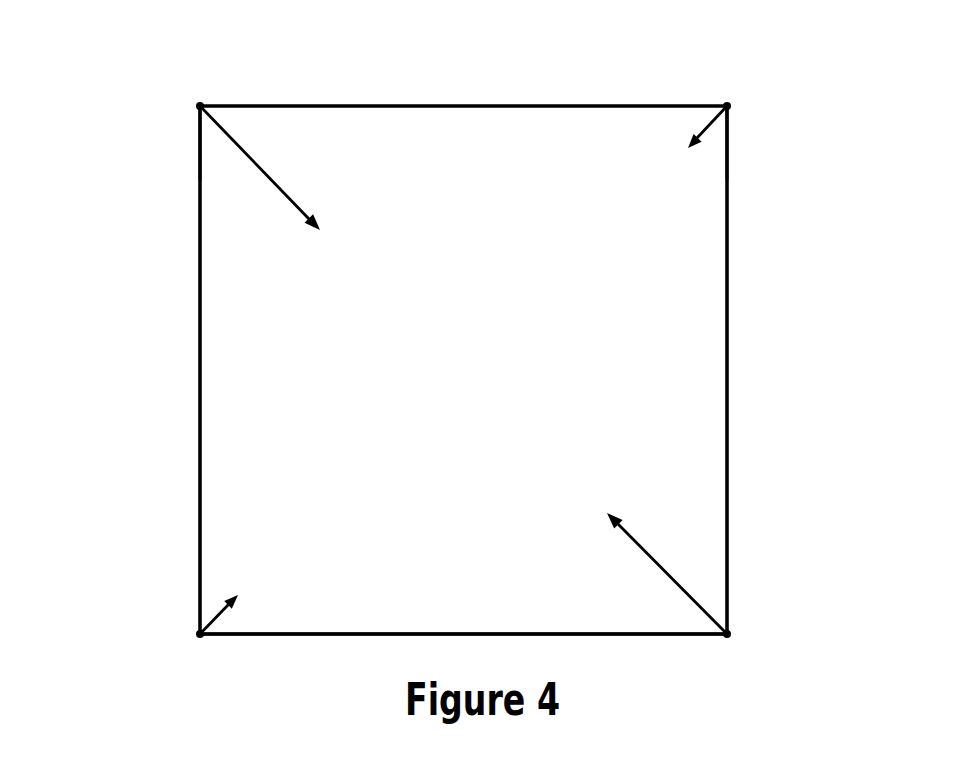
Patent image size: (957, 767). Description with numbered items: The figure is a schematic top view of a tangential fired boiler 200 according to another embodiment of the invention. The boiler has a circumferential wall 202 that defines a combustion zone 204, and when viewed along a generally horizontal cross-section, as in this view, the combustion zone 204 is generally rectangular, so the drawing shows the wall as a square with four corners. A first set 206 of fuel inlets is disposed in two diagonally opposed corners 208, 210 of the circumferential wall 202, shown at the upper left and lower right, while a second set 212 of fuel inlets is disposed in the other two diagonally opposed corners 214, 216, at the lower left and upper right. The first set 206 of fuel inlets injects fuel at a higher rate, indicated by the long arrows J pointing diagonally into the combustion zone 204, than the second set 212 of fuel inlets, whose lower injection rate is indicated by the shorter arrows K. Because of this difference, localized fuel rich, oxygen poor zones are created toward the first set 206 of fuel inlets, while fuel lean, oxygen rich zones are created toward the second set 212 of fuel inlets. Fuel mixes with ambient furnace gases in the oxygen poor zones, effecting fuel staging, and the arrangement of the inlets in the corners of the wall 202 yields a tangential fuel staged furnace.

The tangential fired boiler 200 is at (166, 405).
The circumferential wall 202 is at (200, 273).
The combustion zone 204 is at (487, 389).
The first set of fuel inlets 206 is at (200, 106).
The corner 208 is at (198, 121).
The corner 210 is at (728, 612).
The second set of fuel inlets 212 is at (727, 106).
The corner 214 is at (199, 612).
The corner 216 is at (728, 140).
The arrows J is at (268, 175).
The arrows K is at (708, 127).